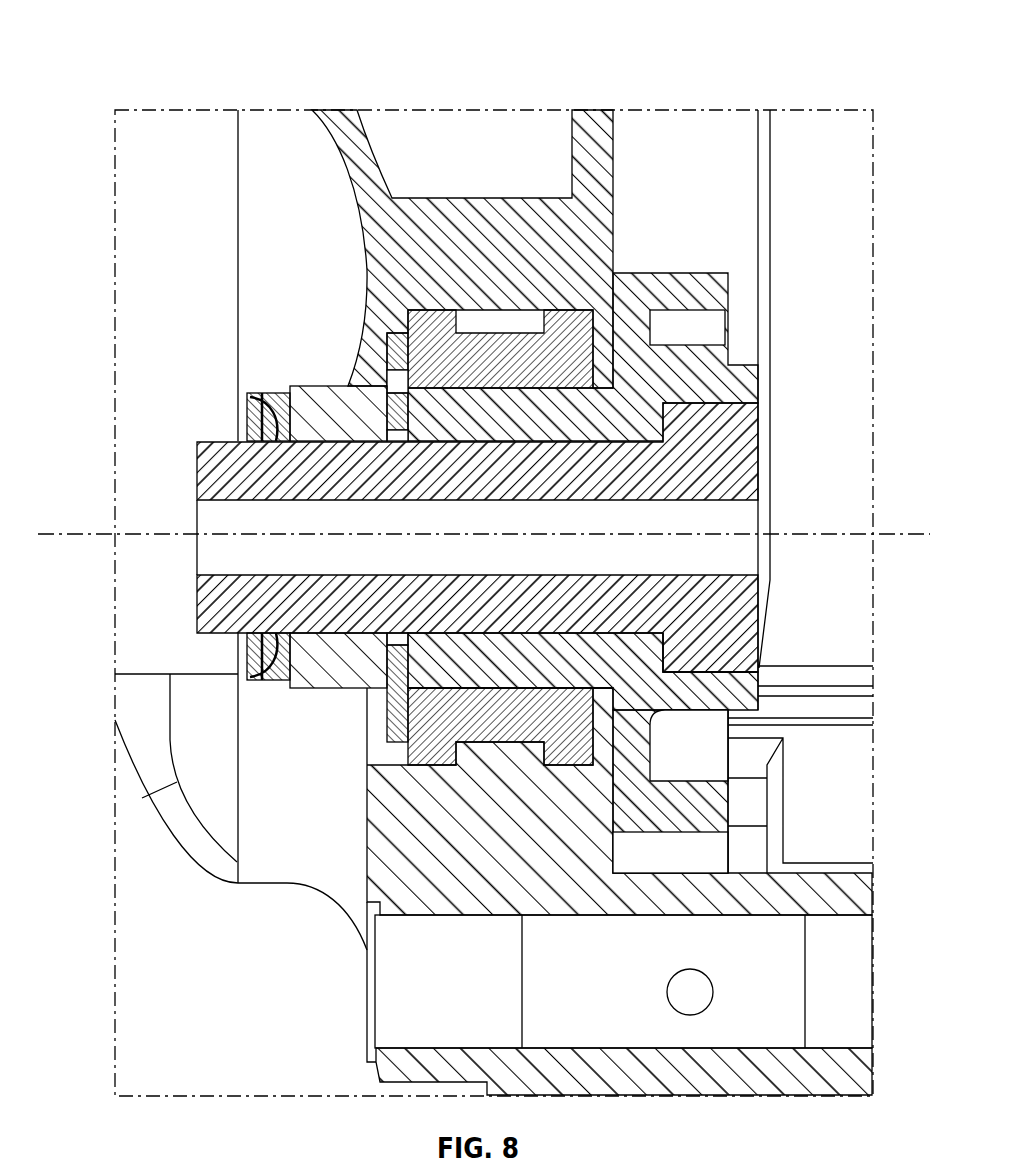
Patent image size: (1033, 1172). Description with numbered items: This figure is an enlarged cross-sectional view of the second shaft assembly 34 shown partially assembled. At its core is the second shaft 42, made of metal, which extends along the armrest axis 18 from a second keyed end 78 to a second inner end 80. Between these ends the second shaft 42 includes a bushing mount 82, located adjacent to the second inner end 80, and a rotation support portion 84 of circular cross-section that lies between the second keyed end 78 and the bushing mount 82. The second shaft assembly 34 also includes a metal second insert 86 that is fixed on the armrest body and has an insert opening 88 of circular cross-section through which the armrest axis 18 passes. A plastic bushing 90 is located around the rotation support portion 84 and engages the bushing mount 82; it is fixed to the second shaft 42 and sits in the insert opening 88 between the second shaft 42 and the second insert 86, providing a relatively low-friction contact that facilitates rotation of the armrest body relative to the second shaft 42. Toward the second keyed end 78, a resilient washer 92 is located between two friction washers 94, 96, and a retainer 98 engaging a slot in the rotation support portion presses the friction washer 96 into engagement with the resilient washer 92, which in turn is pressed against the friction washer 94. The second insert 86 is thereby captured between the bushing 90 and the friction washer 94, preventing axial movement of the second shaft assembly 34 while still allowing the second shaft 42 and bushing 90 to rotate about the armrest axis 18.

The second shaft assembly 34 is at (111, 37).
The armrest axis 18 is at (68, 533).
The second shaft 42 is at (553, 484).
The second keyed end 78 is at (195, 463).
The second inner end 80 is at (740, 638).
The bushing mount 82 is at (708, 658).
The rotation support portion 84 is at (527, 637).
The second insert 86 is at (527, 742).
The insert opening 88 is at (462, 390).
The bushing 90 is at (553, 675).
The resilient washer 92 is at (343, 395).
The friction washer 94 is at (397, 333).
The friction washer 96 is at (288, 398).
The retainer 98 is at (245, 398).